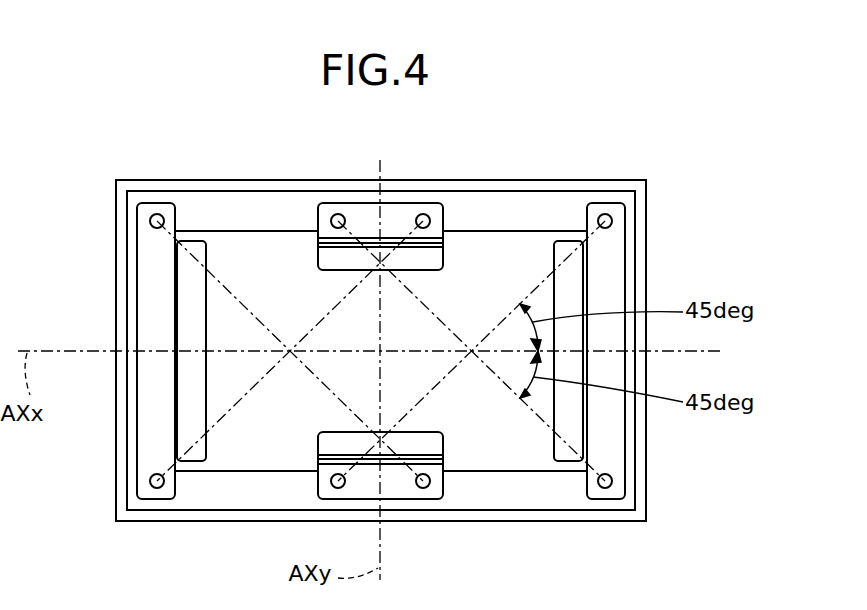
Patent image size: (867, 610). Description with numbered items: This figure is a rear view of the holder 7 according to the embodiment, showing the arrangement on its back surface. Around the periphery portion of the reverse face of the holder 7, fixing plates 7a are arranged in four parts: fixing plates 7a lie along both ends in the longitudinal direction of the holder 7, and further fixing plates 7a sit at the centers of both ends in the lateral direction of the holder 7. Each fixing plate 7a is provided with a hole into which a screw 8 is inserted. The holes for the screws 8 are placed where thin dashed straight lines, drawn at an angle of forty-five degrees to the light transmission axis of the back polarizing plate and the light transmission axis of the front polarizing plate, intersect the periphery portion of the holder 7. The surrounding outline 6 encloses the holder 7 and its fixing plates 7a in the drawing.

The housing frame 6 is at (120, 452).
The holder 7 is at (508, 260).
The fixing plate 7a is at (433, 210).
The screw 8 is at (160, 215).